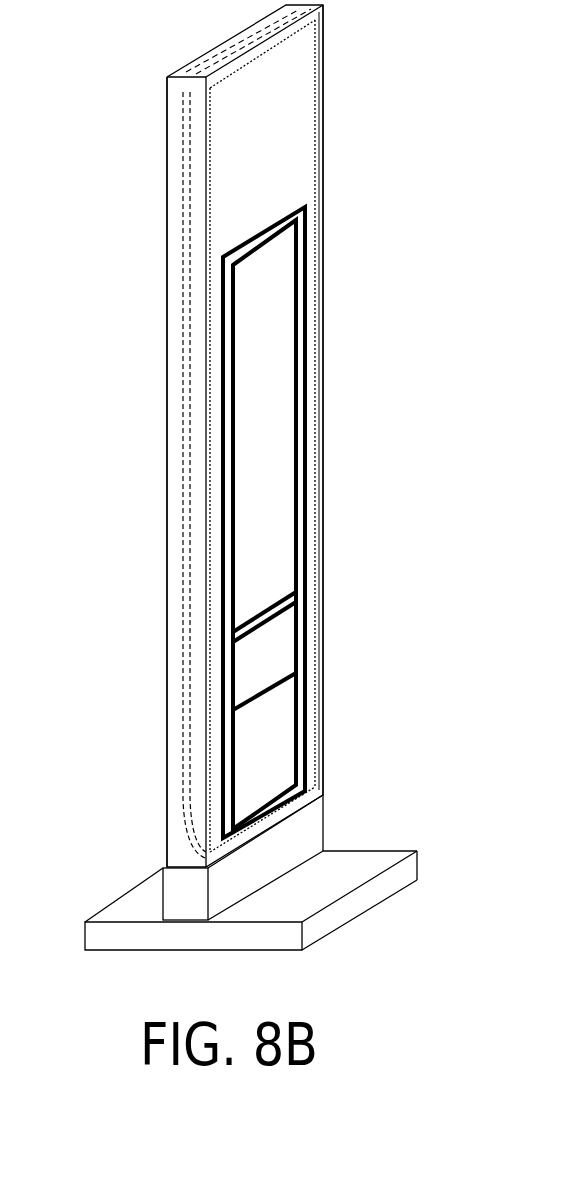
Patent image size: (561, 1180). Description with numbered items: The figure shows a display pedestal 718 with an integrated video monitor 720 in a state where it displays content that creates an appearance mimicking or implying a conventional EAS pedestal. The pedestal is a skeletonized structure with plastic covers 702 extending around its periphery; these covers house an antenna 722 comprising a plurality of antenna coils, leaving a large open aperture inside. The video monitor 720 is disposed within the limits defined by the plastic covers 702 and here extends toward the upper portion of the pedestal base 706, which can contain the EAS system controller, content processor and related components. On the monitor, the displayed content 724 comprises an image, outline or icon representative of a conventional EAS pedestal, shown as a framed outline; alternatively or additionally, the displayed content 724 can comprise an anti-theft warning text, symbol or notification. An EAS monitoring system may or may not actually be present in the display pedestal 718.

The display pedestal 718 is at (244, 477).
The video monitor 720 is at (310, 139).
The displayed content 724 is at (273, 218).
The plastic covers 702 is at (167, 417).
The antenna 722 is at (187, 562).
The base 706 is at (318, 838).